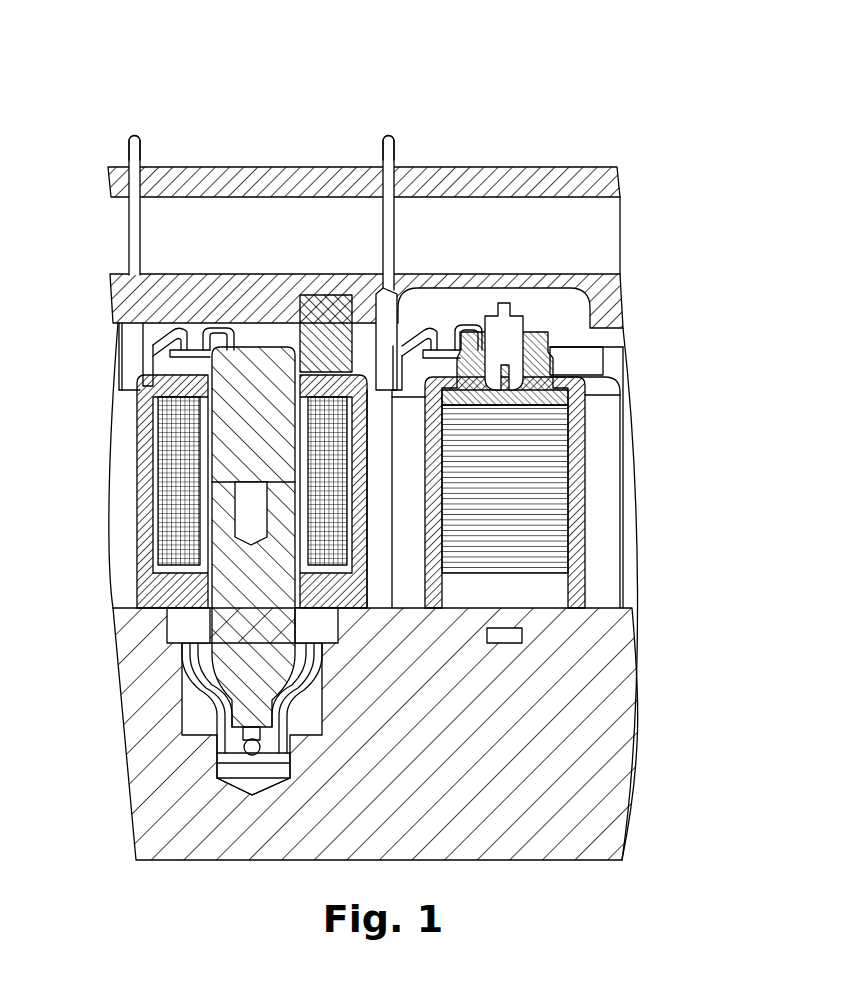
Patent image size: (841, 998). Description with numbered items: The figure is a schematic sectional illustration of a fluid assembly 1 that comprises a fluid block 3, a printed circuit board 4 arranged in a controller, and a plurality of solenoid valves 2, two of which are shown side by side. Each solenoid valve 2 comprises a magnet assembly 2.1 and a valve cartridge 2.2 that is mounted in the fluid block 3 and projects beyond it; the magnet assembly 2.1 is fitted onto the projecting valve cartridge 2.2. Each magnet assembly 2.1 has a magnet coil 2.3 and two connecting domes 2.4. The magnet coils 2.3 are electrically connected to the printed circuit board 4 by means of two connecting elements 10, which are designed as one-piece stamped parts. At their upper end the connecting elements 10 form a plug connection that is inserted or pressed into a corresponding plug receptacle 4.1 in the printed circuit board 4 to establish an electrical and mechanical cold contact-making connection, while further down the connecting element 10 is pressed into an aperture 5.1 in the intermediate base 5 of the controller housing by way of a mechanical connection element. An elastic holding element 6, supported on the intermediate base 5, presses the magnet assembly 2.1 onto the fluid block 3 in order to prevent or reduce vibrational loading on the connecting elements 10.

The fluid assembly 1 is at (136, 67).
The solenoid valve 2 is at (378, 549).
The magnet assembly 2.1 is at (146, 408).
The valve cartridge 2.2 is at (240, 674).
The magnet coil 2.3 is at (168, 508).
The connecting dome 2.4 is at (560, 352).
The fluid block 3 is at (128, 665).
The printed circuit board 4 is at (554, 182).
The plug receptacle 4.1 is at (138, 157).
The intermediate base 5 is at (137, 300).
The aperture 5.1 is at (388, 308).
The elastic holding element 6 is at (330, 318).
The connecting element 10 is at (115, 149).